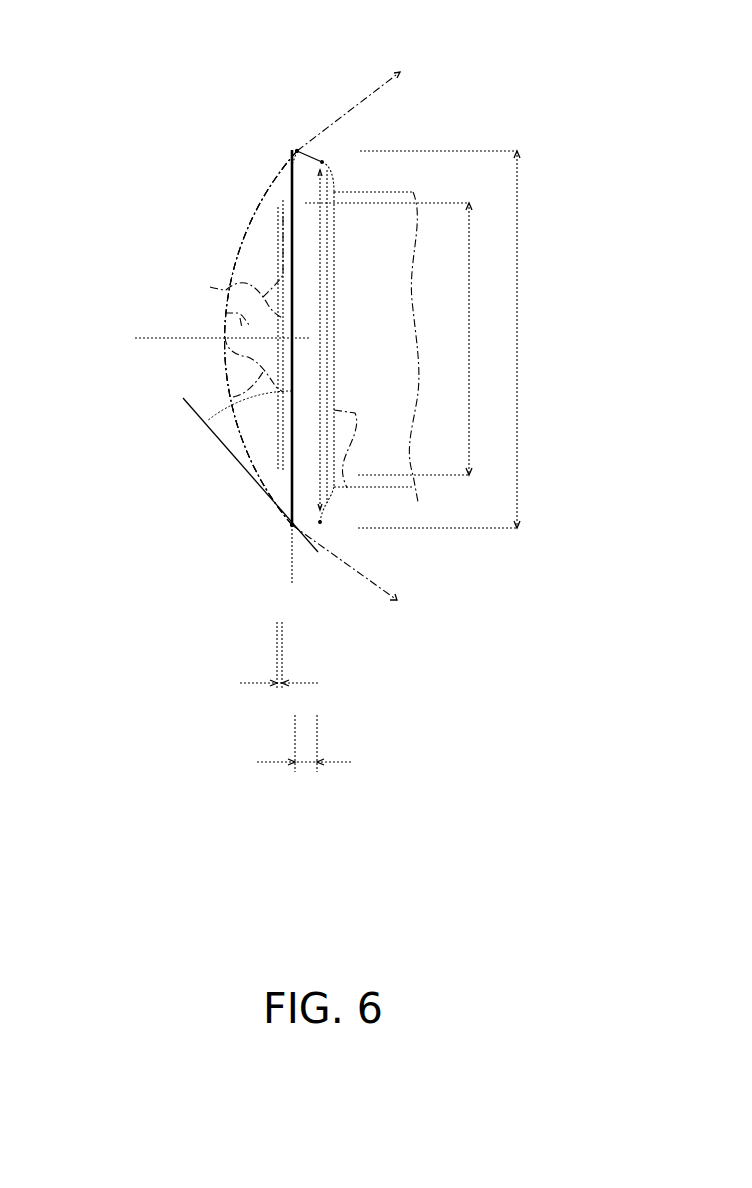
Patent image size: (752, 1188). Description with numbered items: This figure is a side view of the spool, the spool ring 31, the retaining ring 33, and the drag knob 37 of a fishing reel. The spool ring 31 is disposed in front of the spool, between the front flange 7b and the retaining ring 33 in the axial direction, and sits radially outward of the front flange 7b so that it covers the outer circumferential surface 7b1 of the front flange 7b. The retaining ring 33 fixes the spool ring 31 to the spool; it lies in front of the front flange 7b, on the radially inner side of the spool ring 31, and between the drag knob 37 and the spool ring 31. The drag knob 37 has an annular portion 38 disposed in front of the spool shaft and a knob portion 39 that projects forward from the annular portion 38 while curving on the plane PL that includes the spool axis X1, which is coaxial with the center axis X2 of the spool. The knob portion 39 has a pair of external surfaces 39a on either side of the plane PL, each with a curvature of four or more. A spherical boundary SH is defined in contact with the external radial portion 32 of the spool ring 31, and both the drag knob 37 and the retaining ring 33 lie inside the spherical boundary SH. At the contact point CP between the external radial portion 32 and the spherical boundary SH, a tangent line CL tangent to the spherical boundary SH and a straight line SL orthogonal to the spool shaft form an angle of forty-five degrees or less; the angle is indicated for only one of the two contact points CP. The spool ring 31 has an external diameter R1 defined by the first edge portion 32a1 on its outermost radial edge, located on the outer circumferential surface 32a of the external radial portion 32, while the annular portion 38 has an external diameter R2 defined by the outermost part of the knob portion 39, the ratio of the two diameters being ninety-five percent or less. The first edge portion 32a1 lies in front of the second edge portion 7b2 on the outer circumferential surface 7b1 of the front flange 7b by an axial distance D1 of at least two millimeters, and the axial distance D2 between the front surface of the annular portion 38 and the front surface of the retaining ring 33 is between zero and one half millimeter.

The spool ring 31 is at (315, 148).
The external radial portion 32 is at (320, 528).
The outer circumferential surface 32a is at (297, 151).
The first edge portion 32a1 is at (297, 150).
The retaining ring 33 is at (283, 195).
The drag knob 37 is at (261, 338).
The annular portion 38 is at (275, 222).
The knob portion 39 is at (225, 313).
The external surfaces 39a is at (225, 290).
The front flange 7b is at (345, 492).
The outer circumferential surface 7b1 is at (322, 162).
The second edge portion 7b2 is at (322, 160).
The contact point CP is at (297, 151).
The tangent line CL is at (231, 457).
The straight line SL is at (252, 458).
The spherical boundary SH is at (378, 597).
The spool axis X1 is at (177, 340).
The center axis X2 is at (177, 340).
The plane PL is at (177, 340).
The external diameter R1 is at (451, 339).
The external diameter R2 is at (401, 339).
The axial distance D1 is at (305, 757).
The axial distance D2 is at (279, 666).